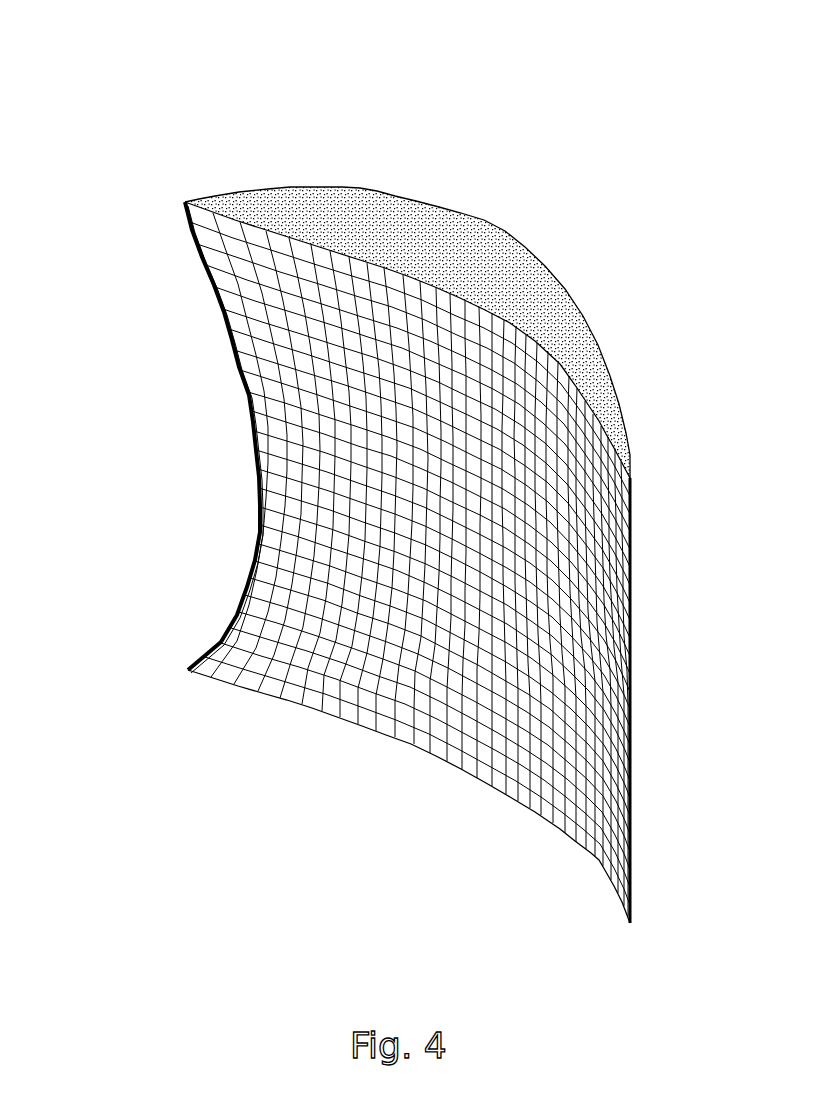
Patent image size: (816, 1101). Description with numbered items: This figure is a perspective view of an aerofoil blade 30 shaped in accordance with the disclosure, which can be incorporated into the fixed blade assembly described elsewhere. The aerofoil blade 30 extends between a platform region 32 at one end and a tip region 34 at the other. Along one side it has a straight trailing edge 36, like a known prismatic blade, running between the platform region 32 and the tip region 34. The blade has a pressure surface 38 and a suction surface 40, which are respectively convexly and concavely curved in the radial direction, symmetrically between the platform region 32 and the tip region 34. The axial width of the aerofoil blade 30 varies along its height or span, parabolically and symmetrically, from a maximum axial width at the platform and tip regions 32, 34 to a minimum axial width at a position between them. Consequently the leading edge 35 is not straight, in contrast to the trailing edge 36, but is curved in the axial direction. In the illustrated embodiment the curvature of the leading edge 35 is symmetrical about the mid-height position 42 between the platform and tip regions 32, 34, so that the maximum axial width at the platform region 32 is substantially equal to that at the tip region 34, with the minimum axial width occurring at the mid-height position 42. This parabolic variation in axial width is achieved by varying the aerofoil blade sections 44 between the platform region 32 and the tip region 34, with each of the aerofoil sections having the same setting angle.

The aerofoil blade 30 is at (539, 133).
The platform region 32 is at (418, 745).
The tip region 34 is at (507, 232).
The leading edge 35 is at (242, 377).
The trailing edge 36 is at (633, 620).
The pressure surface 38 is at (334, 544).
The suction surface 40 is at (608, 317).
The mid-height position 42 is at (238, 460).
The aerofoil blade sections 44 is at (217, 278).